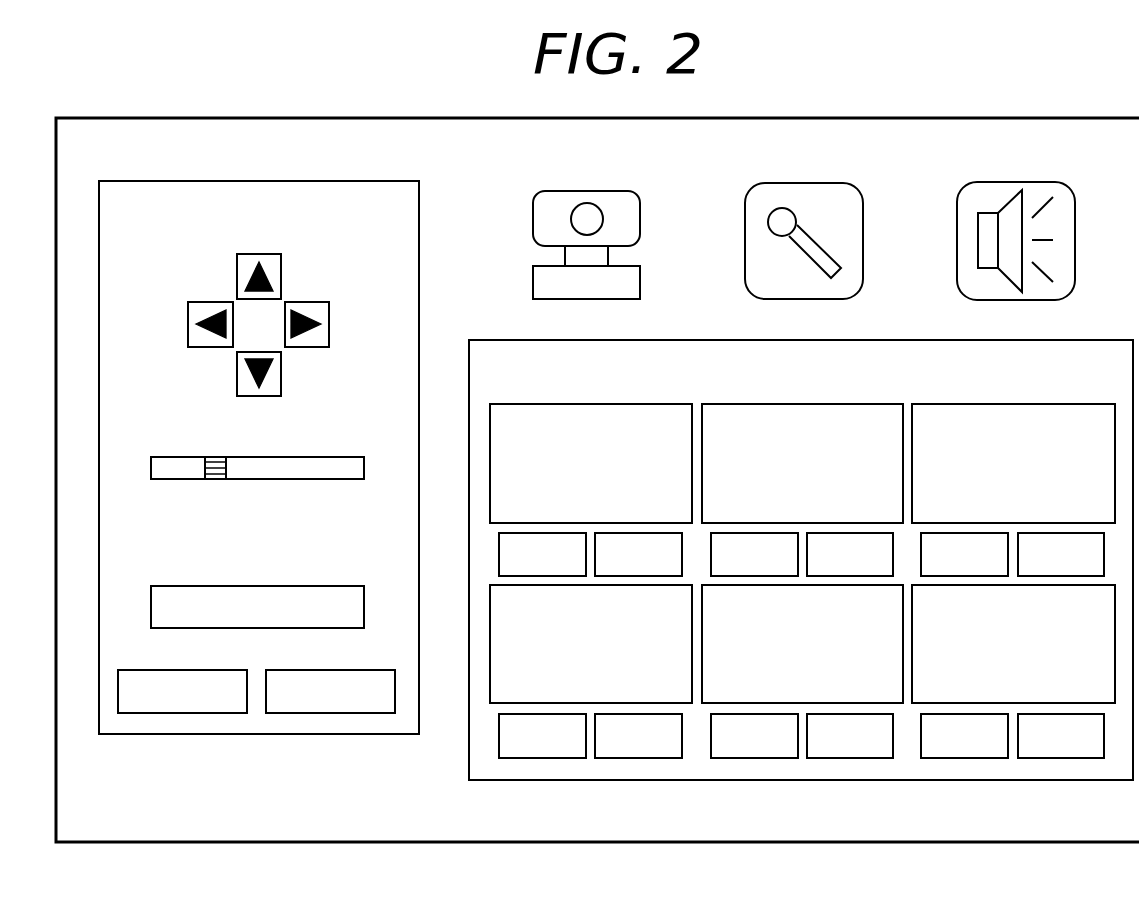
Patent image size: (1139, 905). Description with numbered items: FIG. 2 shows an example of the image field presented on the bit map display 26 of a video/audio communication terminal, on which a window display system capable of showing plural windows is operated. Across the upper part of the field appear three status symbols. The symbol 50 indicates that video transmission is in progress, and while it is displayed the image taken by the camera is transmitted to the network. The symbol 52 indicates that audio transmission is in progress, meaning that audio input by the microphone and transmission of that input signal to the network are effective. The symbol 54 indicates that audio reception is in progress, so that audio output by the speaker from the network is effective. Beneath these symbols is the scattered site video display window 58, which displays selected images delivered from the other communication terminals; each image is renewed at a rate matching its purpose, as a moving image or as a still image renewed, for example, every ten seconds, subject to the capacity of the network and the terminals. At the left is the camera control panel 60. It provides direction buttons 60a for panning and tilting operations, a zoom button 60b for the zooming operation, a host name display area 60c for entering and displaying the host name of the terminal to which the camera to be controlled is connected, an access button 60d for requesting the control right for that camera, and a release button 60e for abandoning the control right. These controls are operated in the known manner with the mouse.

The bit map display 26 is at (1068, 118).
The symbol 50 is at (602, 191).
The symbol 52 is at (825, 183).
The symbol 54 is at (1035, 183).
The scattered site video display window 58 is at (1098, 340).
The camera control panel 60 is at (362, 181).
The direction buttons 60a is at (305, 286).
The zoom button 60b is at (316, 457).
The host name display area 60c is at (316, 586).
The access button 60d is at (198, 670).
The release button 60e is at (336, 670).